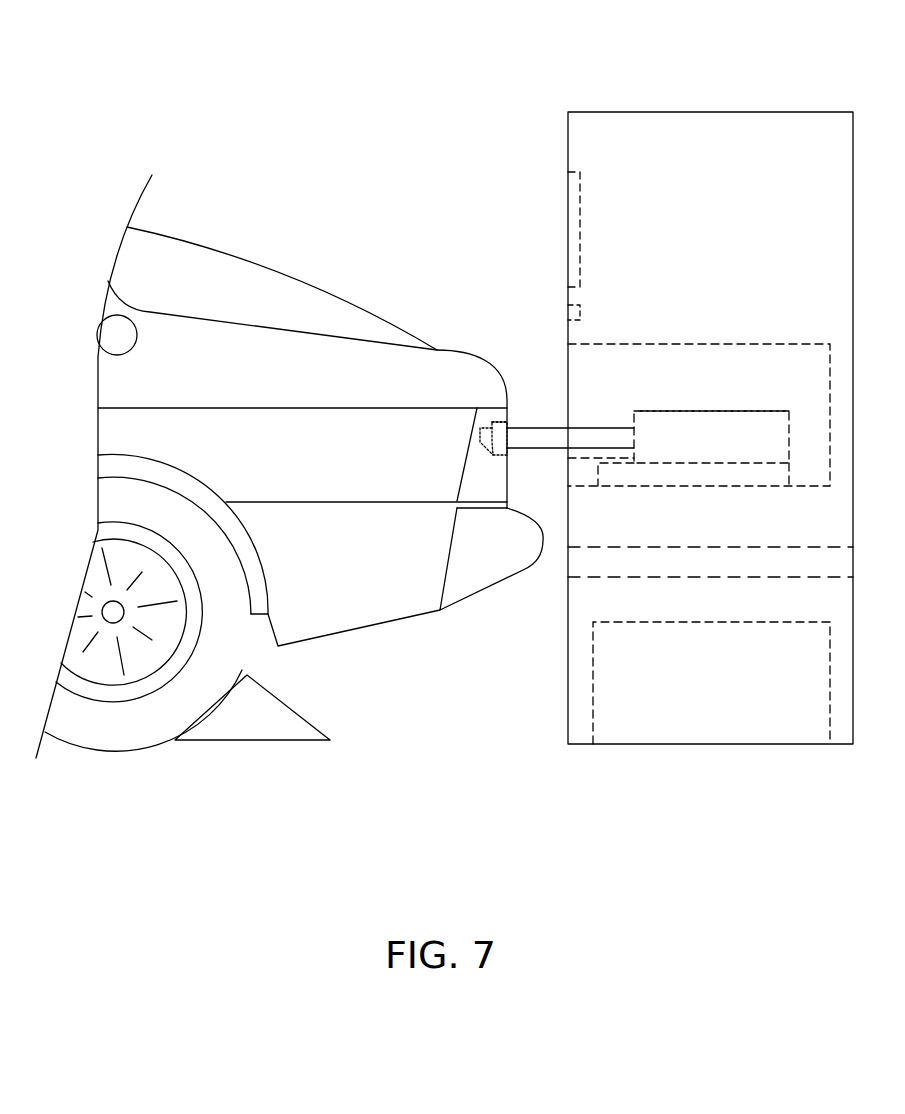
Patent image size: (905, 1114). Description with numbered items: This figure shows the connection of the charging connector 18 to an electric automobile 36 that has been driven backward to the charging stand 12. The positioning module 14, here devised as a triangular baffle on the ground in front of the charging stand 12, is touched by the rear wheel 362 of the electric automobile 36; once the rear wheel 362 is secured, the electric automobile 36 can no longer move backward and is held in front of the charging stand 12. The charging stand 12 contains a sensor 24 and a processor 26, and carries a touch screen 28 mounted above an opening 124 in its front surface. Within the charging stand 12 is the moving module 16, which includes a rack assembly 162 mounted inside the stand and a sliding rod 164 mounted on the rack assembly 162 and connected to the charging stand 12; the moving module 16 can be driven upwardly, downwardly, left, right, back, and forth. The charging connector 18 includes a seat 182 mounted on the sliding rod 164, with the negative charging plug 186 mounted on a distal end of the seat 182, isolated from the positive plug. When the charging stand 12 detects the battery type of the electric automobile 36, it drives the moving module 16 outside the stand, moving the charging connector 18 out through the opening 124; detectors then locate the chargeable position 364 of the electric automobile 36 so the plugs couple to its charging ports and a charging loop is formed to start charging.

The charging stand 12 is at (708, 108).
The positioning module 14 is at (273, 718).
The moving module 16 is at (697, 400).
The charging connector 18 is at (509, 382).
The sensor 24 is at (572, 308).
The processor 26 is at (611, 773).
The touch screen 28 is at (575, 188).
The electric automobile 36 is at (227, 258).
The opening 124 is at (627, 377).
The rack assembly 162 is at (642, 486).
The sliding rod 164 is at (733, 424).
The seat 182 is at (503, 455).
The negative charging plug 186 is at (481, 437).
The rear wheel 362 is at (120, 723).
The chargeable position 364 is at (492, 424).